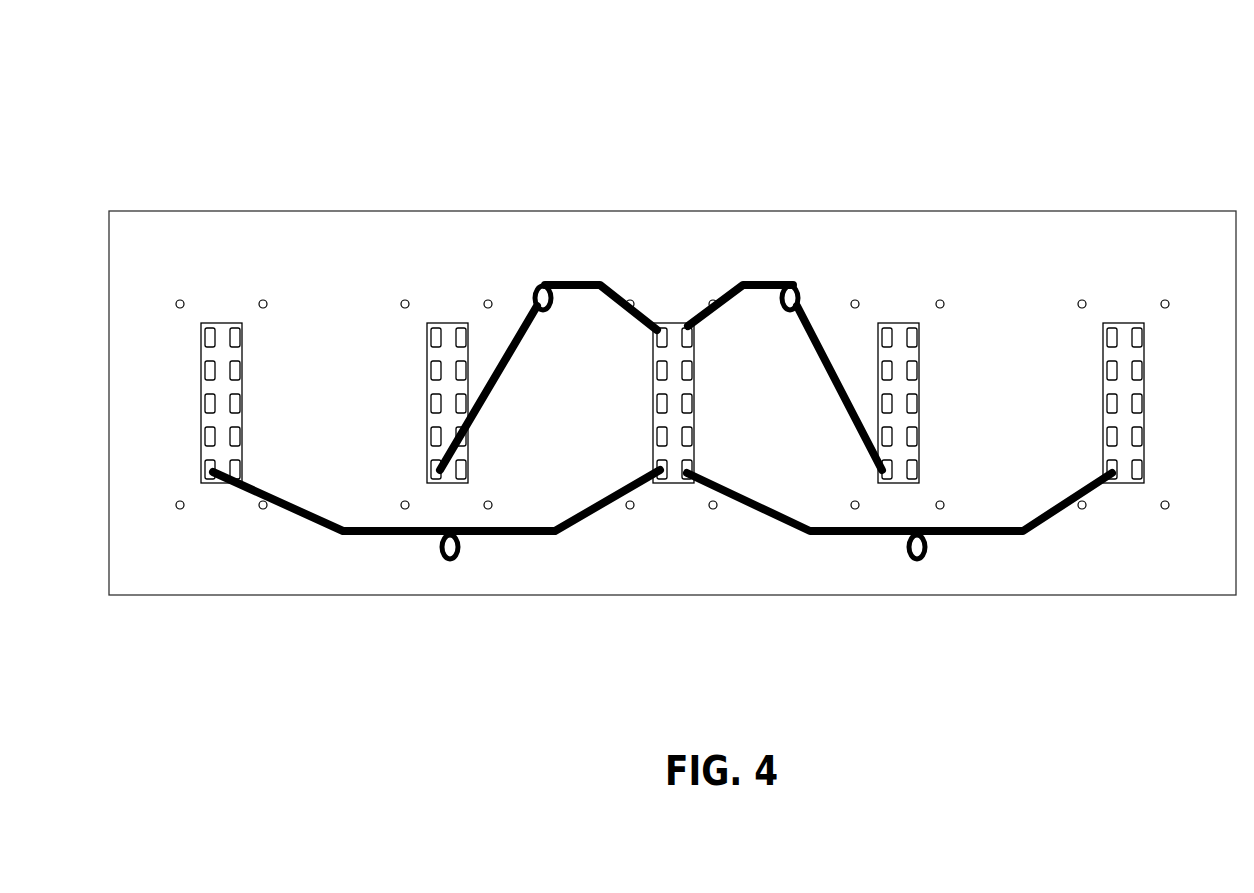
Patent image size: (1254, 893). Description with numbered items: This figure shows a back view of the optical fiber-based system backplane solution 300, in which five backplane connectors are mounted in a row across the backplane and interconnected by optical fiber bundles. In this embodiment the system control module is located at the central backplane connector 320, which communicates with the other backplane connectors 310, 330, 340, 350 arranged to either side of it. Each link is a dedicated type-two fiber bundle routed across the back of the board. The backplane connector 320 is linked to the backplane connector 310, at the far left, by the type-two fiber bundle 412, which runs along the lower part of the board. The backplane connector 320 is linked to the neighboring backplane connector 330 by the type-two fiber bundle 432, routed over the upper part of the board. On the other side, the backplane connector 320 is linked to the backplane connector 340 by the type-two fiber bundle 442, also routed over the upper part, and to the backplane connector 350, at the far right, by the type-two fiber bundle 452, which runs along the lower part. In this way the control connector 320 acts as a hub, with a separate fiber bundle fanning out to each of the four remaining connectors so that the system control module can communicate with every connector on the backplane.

The printed circuit board 300 is at (672, 302).
The backplane connector 310 is at (232, 305).
The backplane connector 320 is at (678, 296).
The backplane connector 330 is at (456, 305).
The backplane connector 340 is at (900, 296).
The backplane connector 350 is at (1124, 296).
The type-2 fiber bundle 412 is at (526, 557).
The type-2 fiber bundle 432 is at (573, 262).
The type-2 fiber bundle 442 is at (785, 262).
The type-2 fiber bundle 452 is at (879, 557).